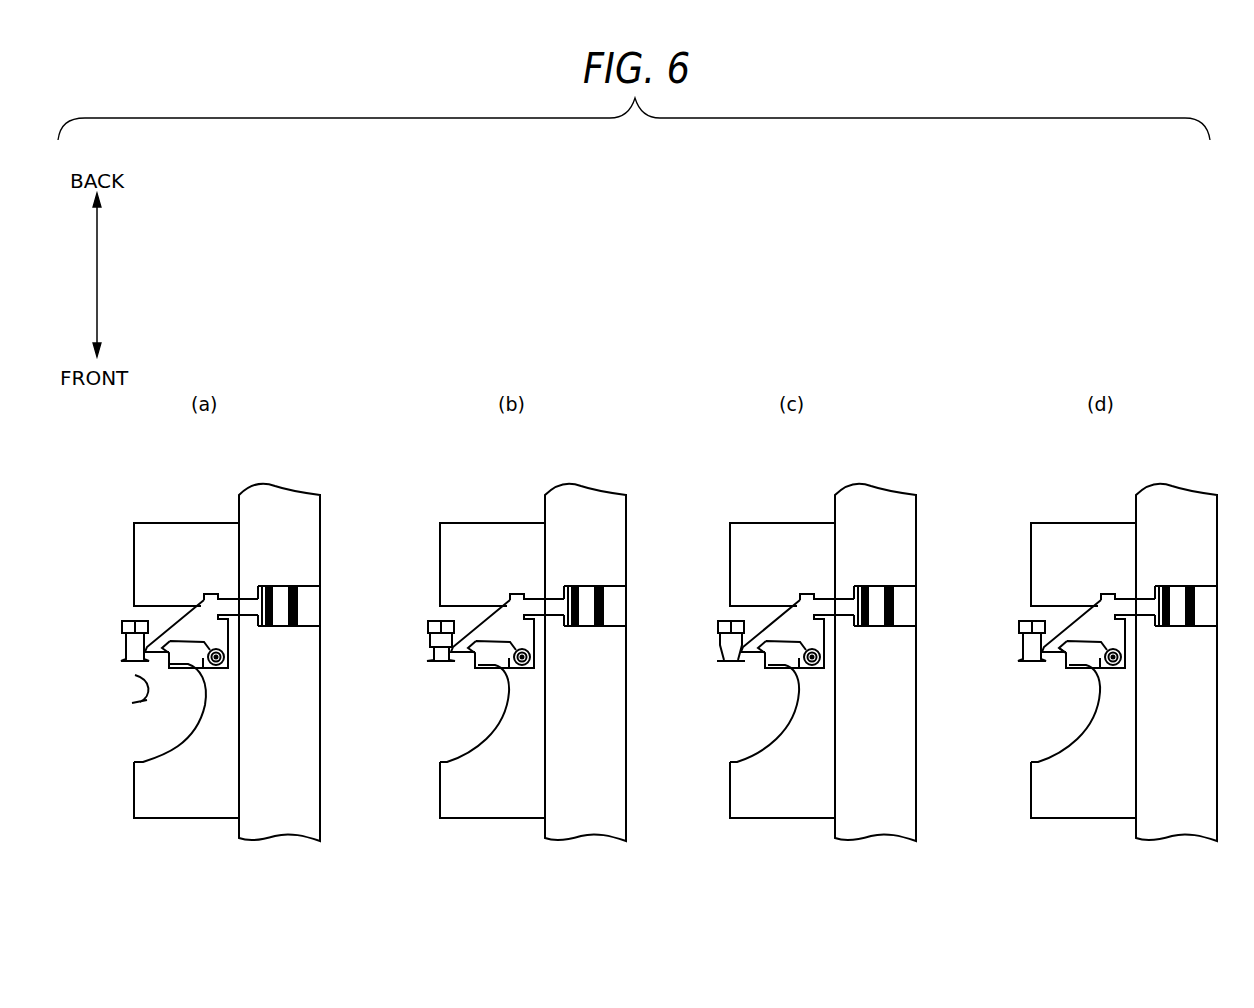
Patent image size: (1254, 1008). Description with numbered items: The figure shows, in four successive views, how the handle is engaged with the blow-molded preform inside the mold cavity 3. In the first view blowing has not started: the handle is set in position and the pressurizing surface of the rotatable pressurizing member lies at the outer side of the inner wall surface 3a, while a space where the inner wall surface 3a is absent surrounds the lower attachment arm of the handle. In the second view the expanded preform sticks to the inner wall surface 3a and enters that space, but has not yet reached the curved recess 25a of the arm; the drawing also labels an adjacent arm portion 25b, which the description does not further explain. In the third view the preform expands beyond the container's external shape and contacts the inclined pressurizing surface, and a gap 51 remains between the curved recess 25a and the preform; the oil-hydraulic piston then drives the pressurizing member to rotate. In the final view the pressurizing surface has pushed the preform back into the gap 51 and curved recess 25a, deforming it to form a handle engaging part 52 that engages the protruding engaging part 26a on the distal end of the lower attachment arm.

The cavity 3 is at (154, 741).
The inner wall surface 3a is at (157, 742).
The curved recess 25a is at (409, 631).
The lower shank portion 25b is at (403, 667).
The engaging part 26a is at (1023, 694).
The gap 51 is at (701, 650).
The handle engaging part 52 is at (1053, 694).